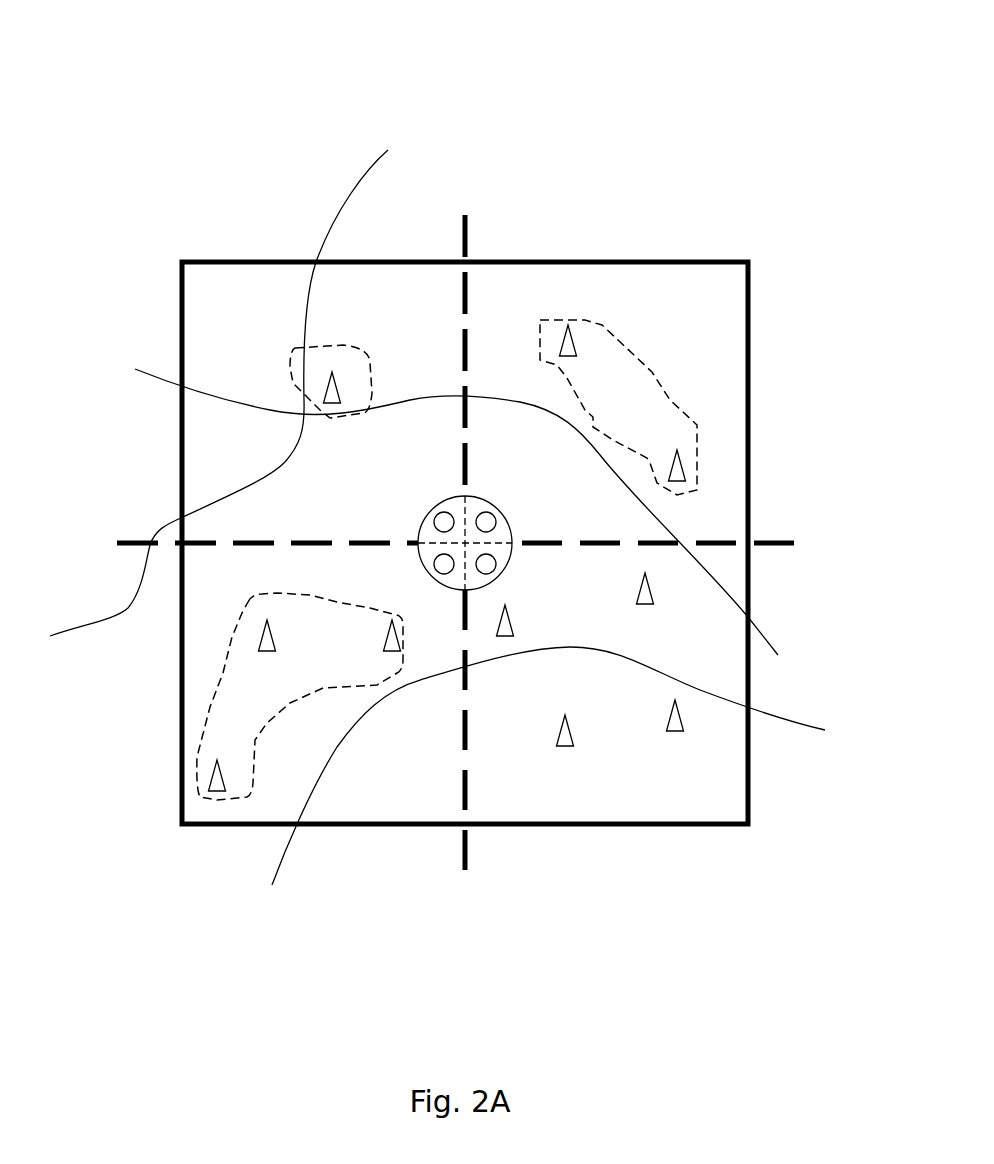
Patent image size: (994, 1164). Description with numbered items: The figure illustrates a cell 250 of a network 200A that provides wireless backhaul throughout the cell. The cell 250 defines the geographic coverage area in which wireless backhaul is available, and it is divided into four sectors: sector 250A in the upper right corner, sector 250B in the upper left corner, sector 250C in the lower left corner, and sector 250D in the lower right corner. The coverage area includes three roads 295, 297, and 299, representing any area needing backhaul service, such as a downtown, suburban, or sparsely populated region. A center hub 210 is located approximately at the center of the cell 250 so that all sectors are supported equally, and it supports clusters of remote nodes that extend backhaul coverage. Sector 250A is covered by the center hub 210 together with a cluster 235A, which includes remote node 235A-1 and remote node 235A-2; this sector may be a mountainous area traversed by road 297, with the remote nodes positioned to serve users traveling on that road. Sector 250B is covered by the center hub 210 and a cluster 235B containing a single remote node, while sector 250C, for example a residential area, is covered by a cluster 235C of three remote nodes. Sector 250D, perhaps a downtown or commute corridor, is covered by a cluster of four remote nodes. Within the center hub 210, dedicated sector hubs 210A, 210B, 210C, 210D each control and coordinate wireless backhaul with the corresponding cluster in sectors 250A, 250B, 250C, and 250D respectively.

The network 200A is at (817, 36).
The cell 250 is at (665, 262).
The sector 250A is at (697, 309).
The sector 250B is at (385, 307).
The sector 250C is at (379, 791).
The sector 250D is at (663, 791).
The road 295 is at (358, 168).
The road 297 is at (762, 622).
The road 299 is at (778, 732).
The center hub 210 is at (460, 523).
The sector hub 210A is at (508, 517).
The sector hub 210B is at (418, 517).
The sector hub 210C is at (433, 588).
The sector hub 210D is at (515, 580).
The cluster of remote nodes 235A is at (691, 336).
The remote node 235A-1 is at (676, 447).
The remote node 235A-2 is at (558, 333).
The cluster of remote nodes 235B is at (290, 355).
The cluster of remote nodes 235C is at (212, 668).